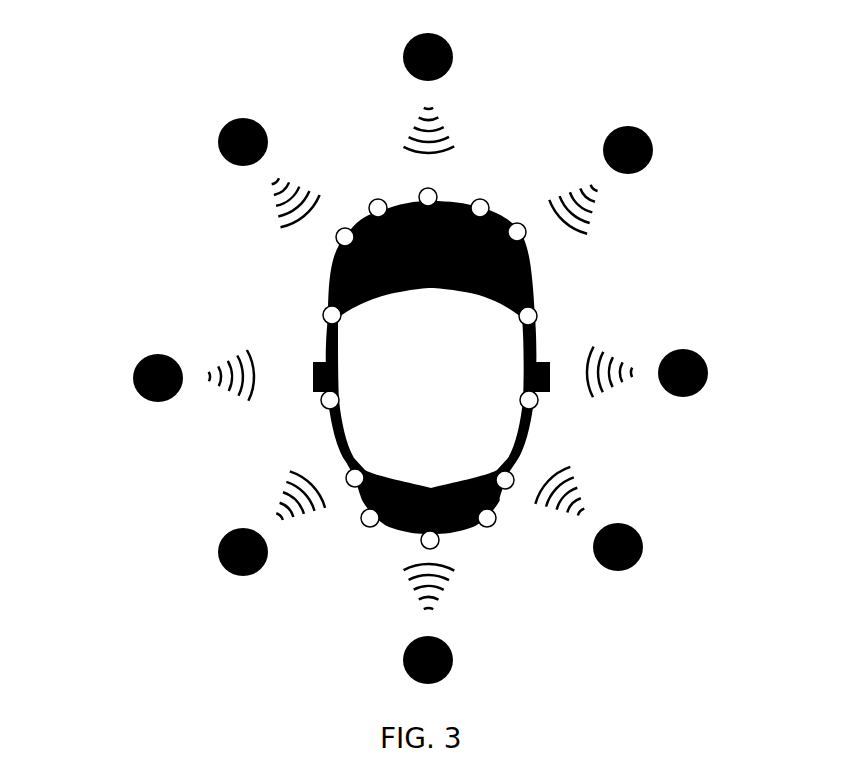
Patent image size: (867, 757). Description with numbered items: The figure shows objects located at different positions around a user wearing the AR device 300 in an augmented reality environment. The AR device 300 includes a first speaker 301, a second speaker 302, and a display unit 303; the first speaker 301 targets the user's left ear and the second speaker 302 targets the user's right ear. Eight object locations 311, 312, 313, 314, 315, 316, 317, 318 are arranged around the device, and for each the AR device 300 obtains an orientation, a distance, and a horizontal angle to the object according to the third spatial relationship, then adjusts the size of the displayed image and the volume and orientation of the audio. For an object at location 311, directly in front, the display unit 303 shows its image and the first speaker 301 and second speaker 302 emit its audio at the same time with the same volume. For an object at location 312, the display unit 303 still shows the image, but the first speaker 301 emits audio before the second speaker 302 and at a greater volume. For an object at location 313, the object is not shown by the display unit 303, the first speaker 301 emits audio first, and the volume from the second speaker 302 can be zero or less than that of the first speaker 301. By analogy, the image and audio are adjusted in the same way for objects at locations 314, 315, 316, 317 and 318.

The AR device 300 is at (328, 352).
The first speaker 301 is at (313, 362).
The second speaker 302 is at (547, 361).
The display unit 303 is at (467, 203).
The location 311 is at (404, 54).
The location 312 is at (218, 140).
The location 313 is at (133, 376).
The location 314 is at (218, 557).
The location 315 is at (404, 661).
The location 316 is at (641, 535).
The location 317 is at (707, 368).
The location 318 is at (648, 138).